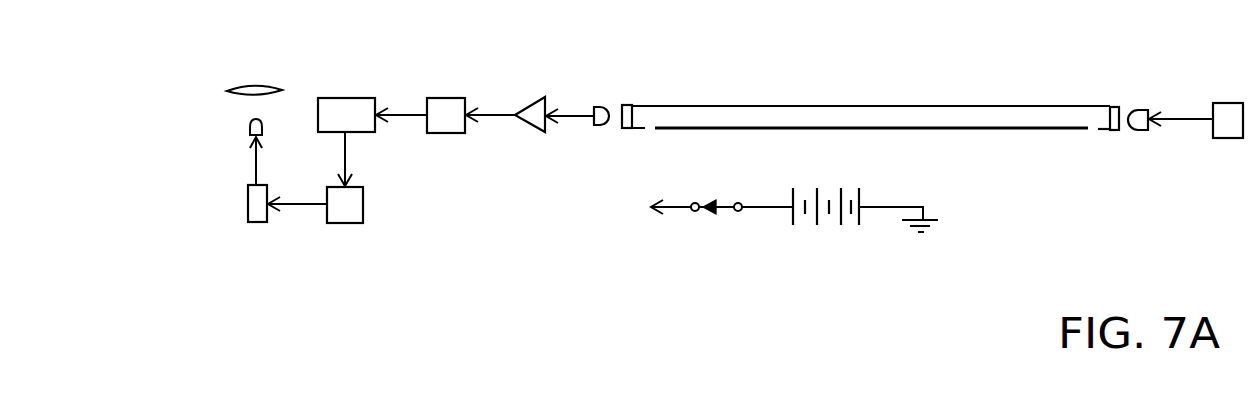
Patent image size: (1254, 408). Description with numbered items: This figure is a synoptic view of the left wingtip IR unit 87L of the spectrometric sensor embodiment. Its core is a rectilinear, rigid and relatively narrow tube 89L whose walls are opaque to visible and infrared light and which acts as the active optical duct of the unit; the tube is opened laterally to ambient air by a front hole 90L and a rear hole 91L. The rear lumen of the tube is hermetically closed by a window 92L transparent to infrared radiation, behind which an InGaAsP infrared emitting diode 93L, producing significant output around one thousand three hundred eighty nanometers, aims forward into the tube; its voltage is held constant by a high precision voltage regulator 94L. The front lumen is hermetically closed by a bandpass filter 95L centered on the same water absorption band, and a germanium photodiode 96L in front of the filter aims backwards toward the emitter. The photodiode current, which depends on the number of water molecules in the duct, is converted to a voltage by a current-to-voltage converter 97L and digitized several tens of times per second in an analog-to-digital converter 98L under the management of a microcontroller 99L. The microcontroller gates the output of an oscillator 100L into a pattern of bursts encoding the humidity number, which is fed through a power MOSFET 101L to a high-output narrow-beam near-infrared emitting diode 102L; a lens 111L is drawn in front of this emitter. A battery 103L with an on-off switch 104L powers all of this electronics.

The lens 111L is at (245, 84).
The near-infrared emitting diode (NIRED) 102L is at (247, 126).
The power MOSFET 101L is at (247, 210).
The oscillator 100L is at (352, 223).
The microcontroller 99L is at (346, 98).
The analog-to-digital (A/D) converter 98L is at (448, 133).
The current-to-voltage (I/V) converter 97L is at (532, 100).
The germanium photodiode 96L is at (601, 125).
The bandpass filter 95L is at (624, 103).
The wingtip IR unit 87L is at (920, 100).
The tube 89L is at (775, 105).
The front hole 90L is at (652, 133).
The rear hole 91L is at (1093, 135).
The window 92L is at (1113, 105).
The infrared emitting diode (IRED) 93L is at (1140, 130).
The voltage regulator 94L is at (1226, 103).
The on-off switch 104L is at (720, 208).
The battery 103L is at (841, 225).